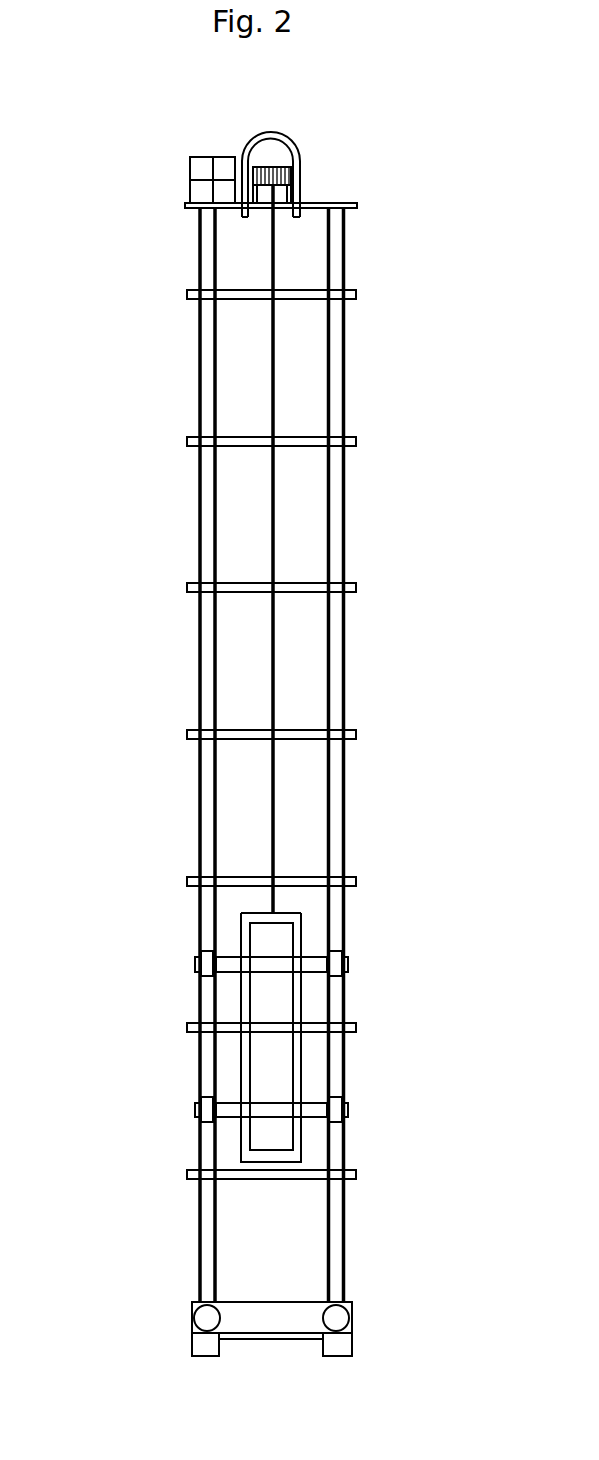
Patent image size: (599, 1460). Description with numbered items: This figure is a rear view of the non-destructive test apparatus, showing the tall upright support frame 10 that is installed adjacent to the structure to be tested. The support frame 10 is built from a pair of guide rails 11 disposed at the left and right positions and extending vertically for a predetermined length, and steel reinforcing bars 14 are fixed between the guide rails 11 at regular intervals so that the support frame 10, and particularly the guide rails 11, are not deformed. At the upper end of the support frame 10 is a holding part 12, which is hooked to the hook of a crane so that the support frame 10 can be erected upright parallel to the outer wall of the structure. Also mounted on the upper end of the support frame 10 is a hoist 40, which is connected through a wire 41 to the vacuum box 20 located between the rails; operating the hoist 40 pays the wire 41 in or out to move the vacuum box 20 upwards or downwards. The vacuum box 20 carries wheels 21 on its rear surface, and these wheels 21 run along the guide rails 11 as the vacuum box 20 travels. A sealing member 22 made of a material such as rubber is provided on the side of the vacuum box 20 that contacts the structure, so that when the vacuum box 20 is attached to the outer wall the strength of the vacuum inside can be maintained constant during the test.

The support frame 10 is at (284, 756).
The guide rails 11 is at (343, 515).
The holding part 12 is at (297, 147).
The reinforcing bars 14 is at (297, 590).
The vacuum box 20 is at (280, 1041).
The wheels 21 is at (340, 978).
The sealing member 22 is at (295, 914).
The hoist 40 is at (300, 168).
The wire 41 is at (275, 695).